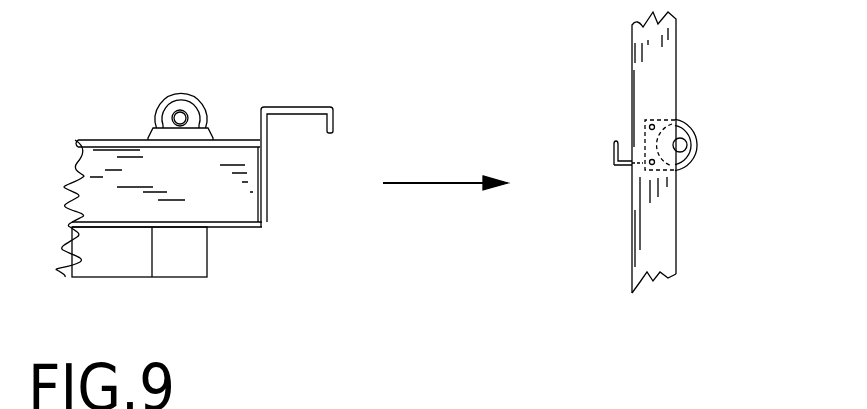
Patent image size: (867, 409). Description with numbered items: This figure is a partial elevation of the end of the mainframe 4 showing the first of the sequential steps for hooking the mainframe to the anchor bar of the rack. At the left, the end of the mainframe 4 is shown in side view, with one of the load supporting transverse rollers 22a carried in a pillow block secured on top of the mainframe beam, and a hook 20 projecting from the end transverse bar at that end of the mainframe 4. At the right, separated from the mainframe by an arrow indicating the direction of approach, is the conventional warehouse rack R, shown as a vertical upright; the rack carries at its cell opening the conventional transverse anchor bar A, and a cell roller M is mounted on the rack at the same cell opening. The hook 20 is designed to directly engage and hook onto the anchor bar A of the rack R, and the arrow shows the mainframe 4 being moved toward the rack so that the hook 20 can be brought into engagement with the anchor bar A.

The mainframe 4 is at (238, 208).
The load supporting transverse roller 22a is at (199, 101).
The hook 20 is at (330, 108).
The warehouse rack R is at (677, 53).
The cell roller M is at (708, 145).
The anchor bar A is at (615, 168).